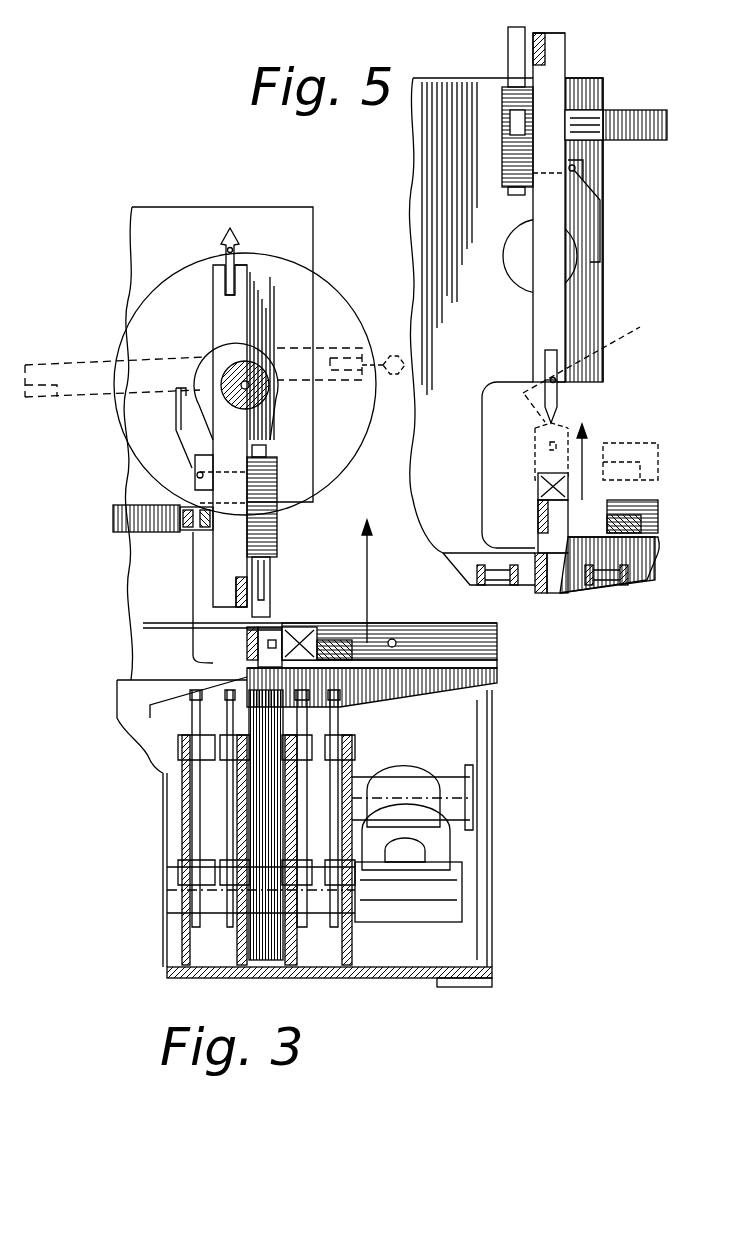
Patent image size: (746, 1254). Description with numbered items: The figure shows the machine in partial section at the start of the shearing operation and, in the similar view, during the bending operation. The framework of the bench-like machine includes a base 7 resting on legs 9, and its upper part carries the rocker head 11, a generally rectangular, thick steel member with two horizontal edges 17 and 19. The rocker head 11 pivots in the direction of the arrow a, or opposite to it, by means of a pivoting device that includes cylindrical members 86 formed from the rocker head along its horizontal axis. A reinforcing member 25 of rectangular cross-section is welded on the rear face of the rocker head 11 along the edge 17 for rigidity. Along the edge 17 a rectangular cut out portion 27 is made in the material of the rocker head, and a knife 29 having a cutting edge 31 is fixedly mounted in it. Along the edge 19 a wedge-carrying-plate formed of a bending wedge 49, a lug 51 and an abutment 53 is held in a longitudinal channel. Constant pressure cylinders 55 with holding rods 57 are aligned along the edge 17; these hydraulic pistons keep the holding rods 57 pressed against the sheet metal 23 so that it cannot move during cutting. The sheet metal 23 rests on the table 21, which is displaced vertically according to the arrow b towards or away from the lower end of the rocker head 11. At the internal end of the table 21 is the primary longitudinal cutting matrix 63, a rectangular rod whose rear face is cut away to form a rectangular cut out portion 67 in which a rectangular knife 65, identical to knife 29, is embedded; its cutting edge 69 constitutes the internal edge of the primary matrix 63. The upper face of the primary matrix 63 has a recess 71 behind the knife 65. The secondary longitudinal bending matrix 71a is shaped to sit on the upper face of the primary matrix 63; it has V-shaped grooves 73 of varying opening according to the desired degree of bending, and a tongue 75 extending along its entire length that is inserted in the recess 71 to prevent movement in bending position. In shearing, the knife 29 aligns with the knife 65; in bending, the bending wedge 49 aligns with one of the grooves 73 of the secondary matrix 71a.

In FIG. 3, the base 7 is at (382, 975).
In FIG. 3, the legs 9 is at (472, 984).
In FIG. 3, the rocker head 11 is at (240, 443).
In FIG. 5, the rocker head 11 is at (545, 195).
In FIG. 3, the horizontal edge 17 is at (232, 608).
In FIG. 5, the horizontal edge 17 is at (562, 34).
In FIG. 3, the horizontal edge 19 is at (240, 268).
In FIG. 5, the horizontal edge 19 is at (540, 400).
In FIG. 3, the table 21 is at (497, 660).
In FIG. 5, the table 21 is at (638, 565).
In FIG. 3, the sheet metal 23 is at (390, 626).
In FIG. 3, the reinforcing member 25 is at (135, 526).
In FIG. 5, the reinforcing member 25 is at (643, 118).
In FIG. 3, the rectangular cut out portion 27 is at (238, 577).
In FIG. 3, the knife 29 is at (238, 592).
In FIG. 5, the knife 29 is at (540, 50).
In FIG. 3, the cutting edge 31 is at (262, 608).
In FIG. 3, the bending wedge 49 is at (232, 242).
In FIG. 5, the bending wedge 49 is at (546, 412).
In FIG. 3, the lug 51 is at (230, 293).
In FIG. 5, the lug 51 is at (545, 356).
In FIG. 3, the abutment 53 is at (226, 262).
In FIG. 5, the abutment 53 is at (560, 385).
In FIG. 3, the constant pressure cylinders 55 is at (265, 548).
In FIG. 5, the constant pressure cylinders 55 is at (517, 137).
In FIG. 3, the holding rods 57 is at (262, 578).
In FIG. 5, the holding rods 57 is at (516, 72).
In FIG. 3, the primary longitudinal cutting matrix 63 is at (290, 632).
In FIG. 5, the primary longitudinal cutting matrix 63 is at (555, 530).
In FIG. 3, the rectangular knife 65 is at (270, 648).
In FIG. 3, the rectangular cut out portion 67 is at (247, 685).
In FIG. 3, the cutting edge 69 is at (258, 633).
In FIG. 3, the recess 71 is at (264, 635).
In FIG. 3, the secondary longitudinal bending matrix 71a is at (330, 646).
In FIG. 5, the secondary longitudinal bending matrix 71a is at (540, 486).
In FIG. 3, the grooves 73 is at (300, 650).
In FIG. 3, the tongue 75 is at (260, 700).
In FIG. 5, the tongue 75 is at (572, 560).
In FIG. 3, the cylindrical members 86 is at (210, 368).
In FIG. 5, the cylindrical members 86 is at (517, 245).
In FIG. 3, the arrow a is at (330, 488).
In FIG. 3, the arrow b is at (368, 570).